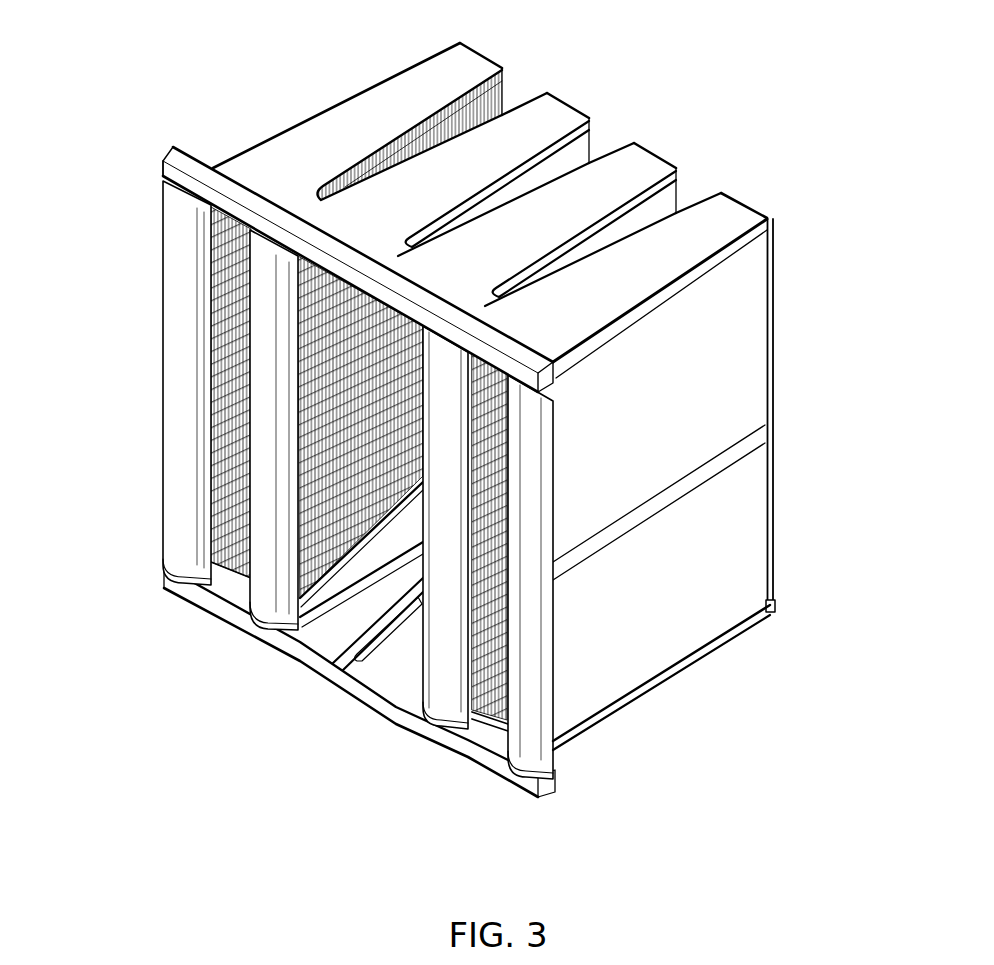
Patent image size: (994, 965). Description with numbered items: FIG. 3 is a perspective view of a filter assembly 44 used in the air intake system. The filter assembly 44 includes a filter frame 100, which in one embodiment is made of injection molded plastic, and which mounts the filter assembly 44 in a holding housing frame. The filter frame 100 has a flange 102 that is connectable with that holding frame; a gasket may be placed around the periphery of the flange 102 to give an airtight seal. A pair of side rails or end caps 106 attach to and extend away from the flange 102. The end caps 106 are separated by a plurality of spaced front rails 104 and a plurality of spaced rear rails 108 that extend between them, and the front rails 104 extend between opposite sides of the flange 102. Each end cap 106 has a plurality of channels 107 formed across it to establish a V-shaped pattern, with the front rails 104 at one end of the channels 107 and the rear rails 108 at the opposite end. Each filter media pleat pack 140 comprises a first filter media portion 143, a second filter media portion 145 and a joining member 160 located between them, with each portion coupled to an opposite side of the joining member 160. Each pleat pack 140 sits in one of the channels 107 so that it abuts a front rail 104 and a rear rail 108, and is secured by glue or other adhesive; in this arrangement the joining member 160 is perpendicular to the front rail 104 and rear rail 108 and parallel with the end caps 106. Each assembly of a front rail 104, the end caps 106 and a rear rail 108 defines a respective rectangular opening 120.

The filter assembly 44 is at (216, 123).
The filter frame 100 is at (162, 205).
The flange 102 is at (189, 590).
The front rails 104 is at (440, 703).
The end caps 106 is at (680, 690).
The channels 107 is at (350, 675).
The rear rails 108 is at (772, 357).
The rectangular openings 120 is at (772, 497).
The filter media pleat pack 140 is at (482, 740).
The first filter media portion 143 is at (748, 285).
The second filter media portion 145 is at (755, 567).
The joining member 160 is at (665, 497).